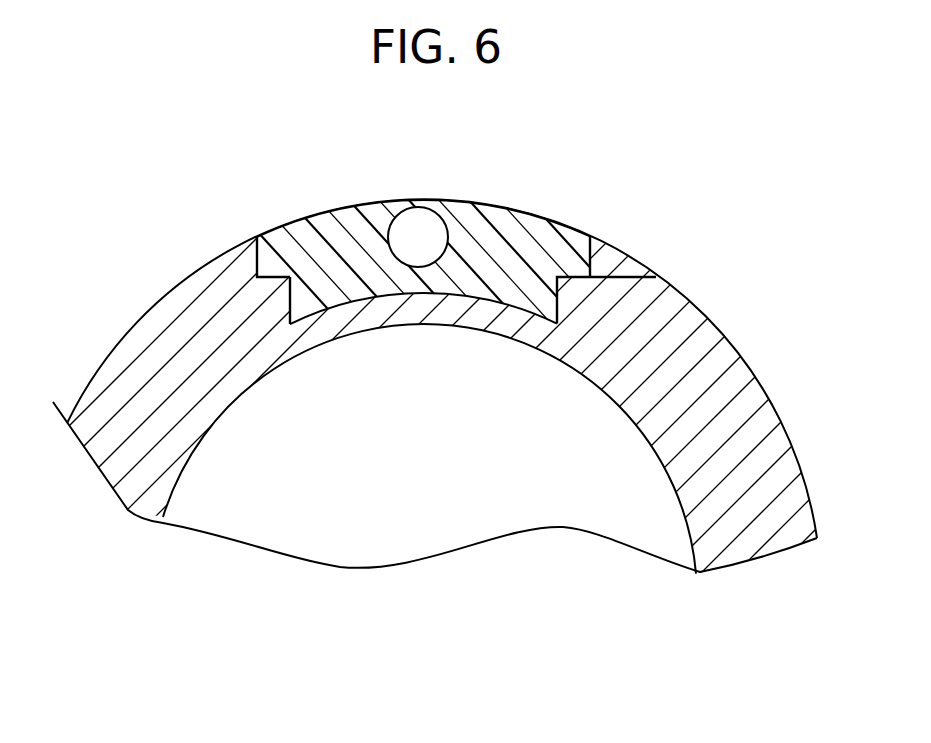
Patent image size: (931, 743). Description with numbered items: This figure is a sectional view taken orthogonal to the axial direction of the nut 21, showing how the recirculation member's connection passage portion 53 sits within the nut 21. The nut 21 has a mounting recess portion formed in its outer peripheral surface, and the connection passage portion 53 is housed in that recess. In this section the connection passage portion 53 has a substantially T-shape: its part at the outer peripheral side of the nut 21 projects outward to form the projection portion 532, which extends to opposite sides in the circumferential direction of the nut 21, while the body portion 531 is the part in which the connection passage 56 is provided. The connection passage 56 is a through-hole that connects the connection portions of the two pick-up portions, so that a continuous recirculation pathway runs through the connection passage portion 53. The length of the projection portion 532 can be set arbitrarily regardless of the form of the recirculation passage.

The nut 21 is at (717, 427).
The connection passage portion 53 is at (417, 240).
The body portion 531 is at (658, 277).
The projection portion 532 is at (271, 258).
The connection passage 56 is at (418, 240).